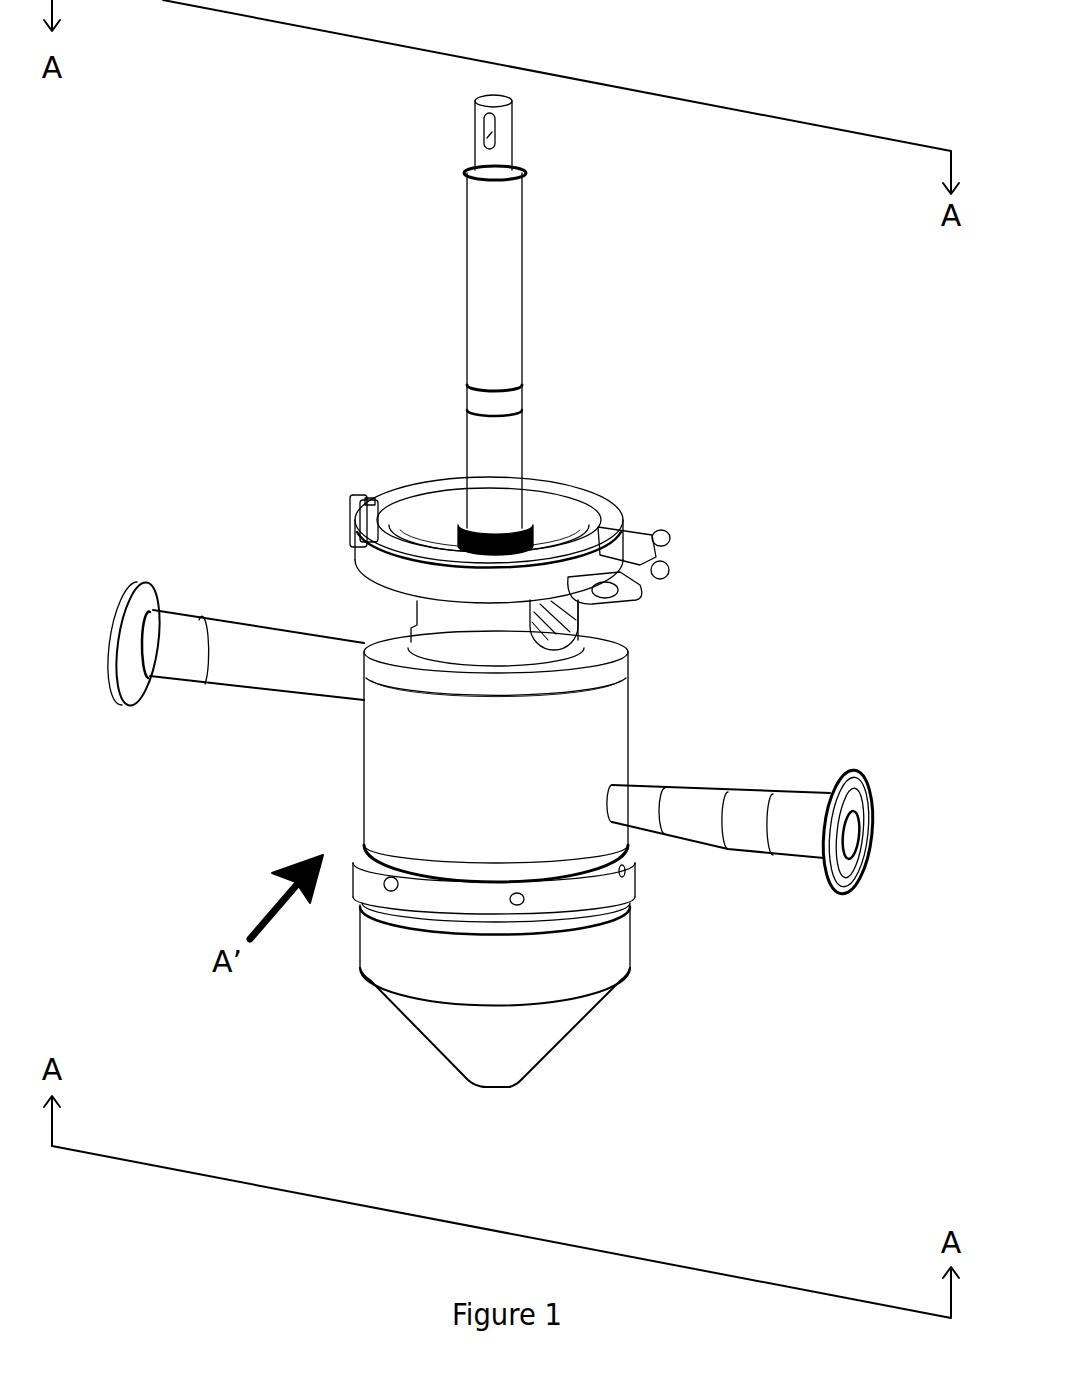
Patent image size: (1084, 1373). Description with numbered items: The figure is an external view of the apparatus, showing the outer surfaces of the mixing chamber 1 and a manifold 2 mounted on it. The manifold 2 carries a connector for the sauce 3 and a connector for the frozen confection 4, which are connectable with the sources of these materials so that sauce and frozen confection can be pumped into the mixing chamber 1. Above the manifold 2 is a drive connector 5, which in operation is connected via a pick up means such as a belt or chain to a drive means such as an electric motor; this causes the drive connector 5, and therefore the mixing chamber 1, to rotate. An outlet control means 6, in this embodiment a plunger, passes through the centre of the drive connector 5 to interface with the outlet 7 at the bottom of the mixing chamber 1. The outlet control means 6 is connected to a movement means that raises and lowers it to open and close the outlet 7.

The mixing chamber 1 is at (637, 961).
The manifold 2 is at (637, 733).
The connector for the sauce 3 is at (748, 857).
The connector for the frozen confection 4 is at (284, 613).
The drive connector 5 is at (527, 521).
The outlet control means 6 is at (528, 410).
The outlet 7 is at (487, 1091).